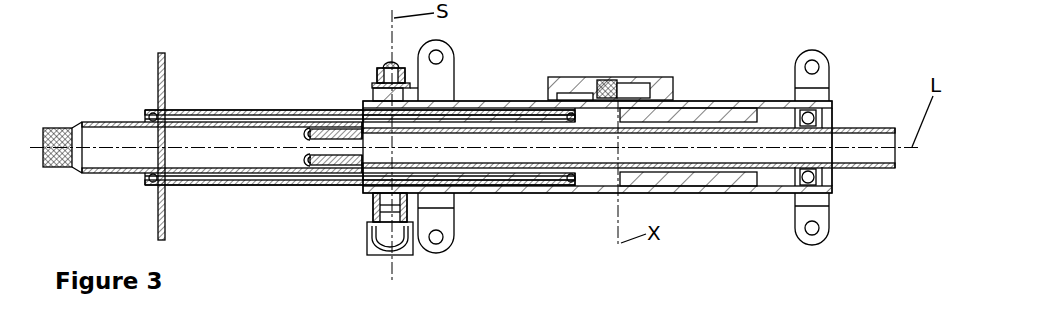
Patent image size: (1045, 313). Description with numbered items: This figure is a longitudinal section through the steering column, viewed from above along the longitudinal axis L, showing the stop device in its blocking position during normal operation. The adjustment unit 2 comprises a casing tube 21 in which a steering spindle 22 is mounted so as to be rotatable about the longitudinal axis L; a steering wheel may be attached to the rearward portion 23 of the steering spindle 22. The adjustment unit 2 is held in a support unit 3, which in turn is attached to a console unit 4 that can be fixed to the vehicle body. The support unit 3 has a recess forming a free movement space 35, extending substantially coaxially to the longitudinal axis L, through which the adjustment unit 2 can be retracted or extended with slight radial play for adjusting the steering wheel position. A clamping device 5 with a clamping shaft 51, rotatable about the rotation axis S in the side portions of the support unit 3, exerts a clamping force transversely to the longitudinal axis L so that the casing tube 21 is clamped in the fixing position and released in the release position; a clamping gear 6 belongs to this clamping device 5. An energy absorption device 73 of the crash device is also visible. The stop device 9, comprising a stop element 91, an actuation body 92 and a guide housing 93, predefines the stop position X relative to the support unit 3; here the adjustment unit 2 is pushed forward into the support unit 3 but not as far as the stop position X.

The adjustment unit 2 is at (261, 97).
The support unit 3 is at (712, 189).
The console unit 4 is at (822, 77).
The clamping device 5 is at (357, 256).
The clamping gear 6 is at (355, 218).
The stop device 9 is at (605, 55).
The casing tube 21 is at (210, 110).
The steering spindle 22 is at (108, 122).
The portion 23 is at (52, 127).
The movement space 35 is at (608, 178).
The clamping shaft 51 is at (383, 64).
The energy absorption device 73 is at (733, 105).
The stop element 91 is at (590, 97).
The actuation body 92 is at (617, 86).
The guide housing 93 is at (670, 78).